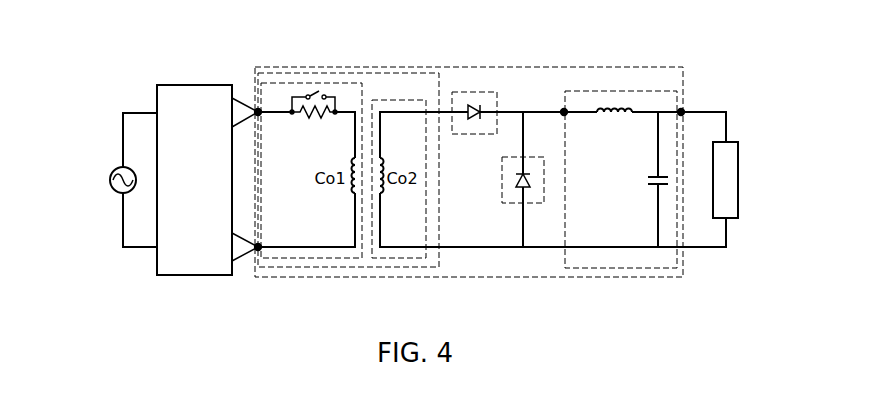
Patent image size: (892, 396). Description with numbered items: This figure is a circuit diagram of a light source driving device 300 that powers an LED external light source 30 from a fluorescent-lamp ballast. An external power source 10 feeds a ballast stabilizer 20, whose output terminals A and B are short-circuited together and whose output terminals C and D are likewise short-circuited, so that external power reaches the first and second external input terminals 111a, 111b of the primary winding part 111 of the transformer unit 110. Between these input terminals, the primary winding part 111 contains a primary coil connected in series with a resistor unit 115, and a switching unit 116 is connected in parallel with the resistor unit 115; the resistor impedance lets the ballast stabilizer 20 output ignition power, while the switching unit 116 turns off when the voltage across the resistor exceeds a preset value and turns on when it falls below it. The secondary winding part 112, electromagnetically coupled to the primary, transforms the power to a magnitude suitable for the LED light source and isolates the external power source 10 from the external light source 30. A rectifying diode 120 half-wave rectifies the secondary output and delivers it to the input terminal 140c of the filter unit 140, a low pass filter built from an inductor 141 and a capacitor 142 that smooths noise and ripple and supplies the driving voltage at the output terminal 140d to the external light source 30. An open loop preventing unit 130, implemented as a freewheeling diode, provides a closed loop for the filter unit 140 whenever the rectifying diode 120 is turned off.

The external power source 10 is at (120, 167).
The ballast stabilizer 20 is at (180, 85).
The external light source 30 is at (730, 218).
The transformer unit 110 is at (372, 73).
The primary winding part 111 is at (287, 82).
The first external input terminal 111a is at (256, 105).
The second external input terminal 111b is at (257, 255).
The secondary winding part 112 is at (412, 100).
The resistor unit 115 is at (318, 120).
The switching unit 116 is at (315, 88).
The rectifying diode 120 is at (476, 92).
The open loop preventing unit 130 is at (502, 180).
The filter unit 140 is at (621, 148).
The input terminal 140c is at (563, 107).
The output terminal 140d is at (683, 108).
The inductor 141 is at (612, 120).
The capacitor 142 is at (648, 180).
The light source driving device 300 is at (663, 67).